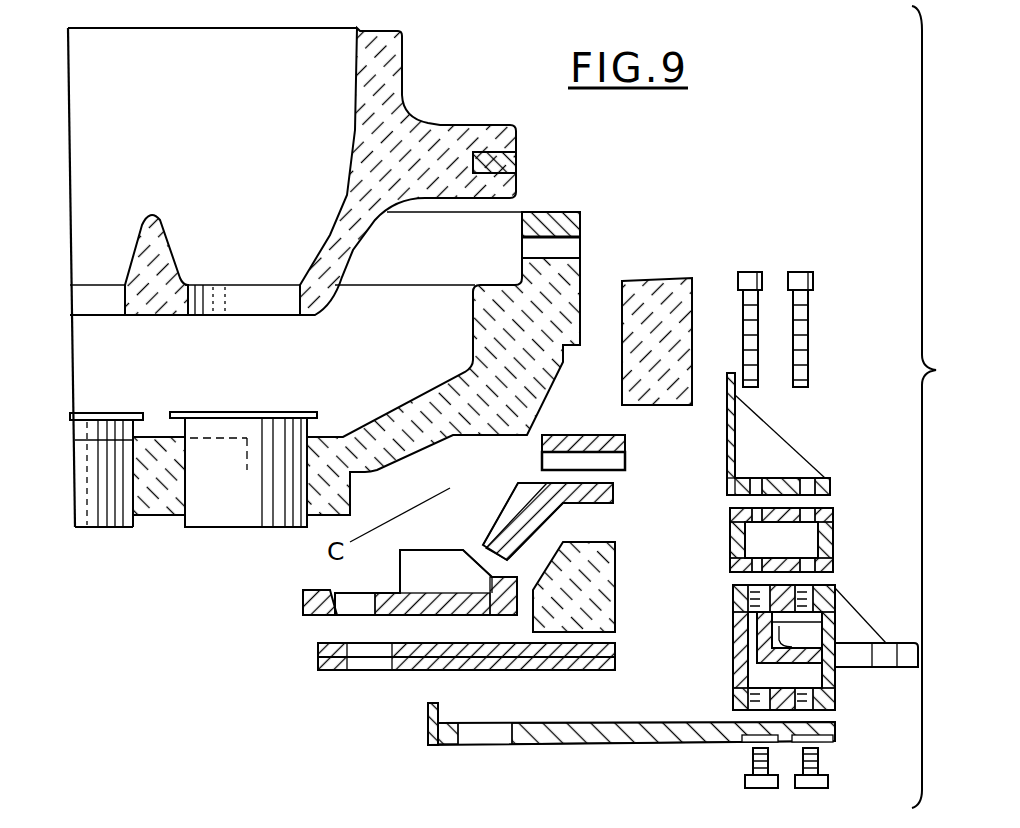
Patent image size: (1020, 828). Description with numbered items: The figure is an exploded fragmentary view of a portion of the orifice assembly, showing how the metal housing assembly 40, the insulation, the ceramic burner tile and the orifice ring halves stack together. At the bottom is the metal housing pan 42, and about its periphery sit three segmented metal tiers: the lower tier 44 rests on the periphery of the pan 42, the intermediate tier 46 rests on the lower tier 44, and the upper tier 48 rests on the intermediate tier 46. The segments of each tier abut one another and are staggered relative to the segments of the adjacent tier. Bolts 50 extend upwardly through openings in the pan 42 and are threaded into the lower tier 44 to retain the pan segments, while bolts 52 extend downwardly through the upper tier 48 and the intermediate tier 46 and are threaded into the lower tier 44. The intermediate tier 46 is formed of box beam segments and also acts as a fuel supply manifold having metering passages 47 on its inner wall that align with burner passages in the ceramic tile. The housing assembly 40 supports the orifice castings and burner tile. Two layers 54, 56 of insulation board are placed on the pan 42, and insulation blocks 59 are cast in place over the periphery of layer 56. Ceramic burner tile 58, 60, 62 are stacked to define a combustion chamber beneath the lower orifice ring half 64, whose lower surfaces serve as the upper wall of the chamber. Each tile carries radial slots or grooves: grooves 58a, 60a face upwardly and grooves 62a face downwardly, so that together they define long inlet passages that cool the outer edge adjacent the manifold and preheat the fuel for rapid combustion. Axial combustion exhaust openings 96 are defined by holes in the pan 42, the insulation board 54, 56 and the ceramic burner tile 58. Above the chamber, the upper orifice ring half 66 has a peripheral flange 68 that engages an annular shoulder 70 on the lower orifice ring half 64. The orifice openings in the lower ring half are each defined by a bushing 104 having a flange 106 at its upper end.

The metal housing assembly 40 is at (785, 431).
The metal housing pan 42 is at (633, 744).
The lower tier 44 is at (838, 606).
The intermediate tier 46 is at (835, 538).
The metering passages 47 is at (731, 540).
The upper tier 48 is at (797, 465).
The bolts 50 is at (812, 790).
The bolts 52 is at (752, 272).
The insulation board layer 54 is at (617, 665).
The insulation board layer 56 is at (617, 647).
The ceramic burner tile 58 is at (300, 610).
The radial grooves 58a is at (427, 560).
The insulation blocks 59 is at (605, 593).
The ceramic burner tile 60 is at (563, 506).
The radial grooves 60a is at (503, 518).
The ceramic burner tile 62 is at (620, 443).
The radial grooves 62a is at (620, 460).
The lower orifice ring half 64 is at (473, 332).
The upper orifice ring half 66 is at (392, 70).
The peripheral flange 68 is at (453, 125).
The annular shoulder 70 is at (496, 280).
The axial combustion exhaust openings 96 is at (493, 742).
The bushing 104 is at (99, 512).
The flange 106 is at (136, 411).